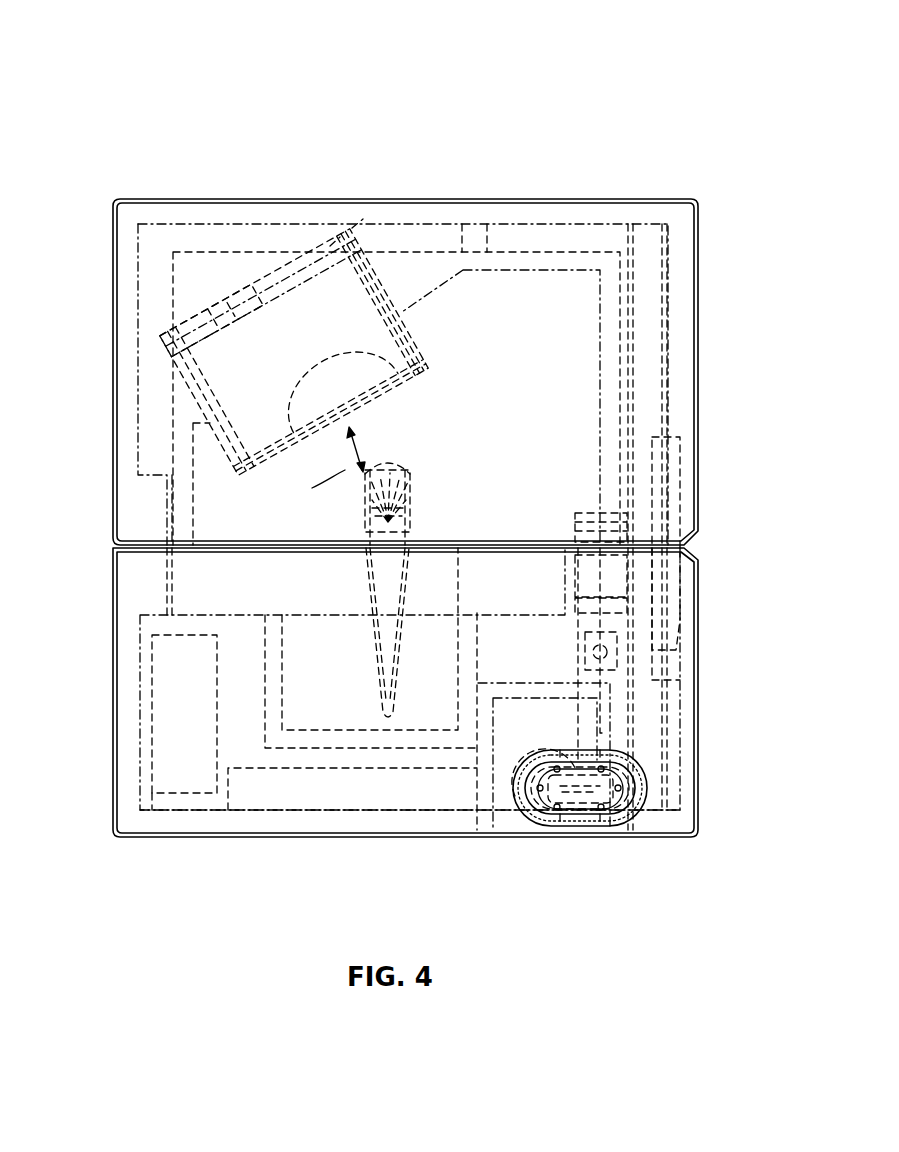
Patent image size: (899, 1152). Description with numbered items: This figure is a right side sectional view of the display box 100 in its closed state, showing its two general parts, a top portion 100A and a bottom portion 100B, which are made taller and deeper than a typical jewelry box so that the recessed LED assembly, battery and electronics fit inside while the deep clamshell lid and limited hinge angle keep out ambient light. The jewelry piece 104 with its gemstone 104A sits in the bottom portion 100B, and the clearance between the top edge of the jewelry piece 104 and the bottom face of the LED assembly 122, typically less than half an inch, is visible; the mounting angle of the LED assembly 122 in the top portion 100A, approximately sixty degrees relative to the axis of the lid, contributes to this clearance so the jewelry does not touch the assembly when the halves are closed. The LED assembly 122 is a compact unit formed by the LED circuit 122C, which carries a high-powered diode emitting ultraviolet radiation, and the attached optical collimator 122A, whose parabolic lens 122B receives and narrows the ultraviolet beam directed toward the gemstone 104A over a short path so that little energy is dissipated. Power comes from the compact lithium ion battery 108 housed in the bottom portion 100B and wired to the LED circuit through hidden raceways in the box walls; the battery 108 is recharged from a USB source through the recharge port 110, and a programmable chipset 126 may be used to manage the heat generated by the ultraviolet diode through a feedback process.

The box 100 is at (127, 60).
The top portion 100A is at (704, 325).
The bottom portion 100B is at (702, 738).
The jewelry piece 104 is at (402, 590).
The gemstone 104A is at (407, 474).
The battery 108 is at (292, 795).
The recharge port 110 is at (612, 797).
The LED assembly 122 is at (388, 293).
The optical collimator 122A is at (402, 343).
The parabolic lens 122B is at (312, 393).
The LED circuit 122C is at (207, 317).
The programmable chipset 126 is at (175, 744).